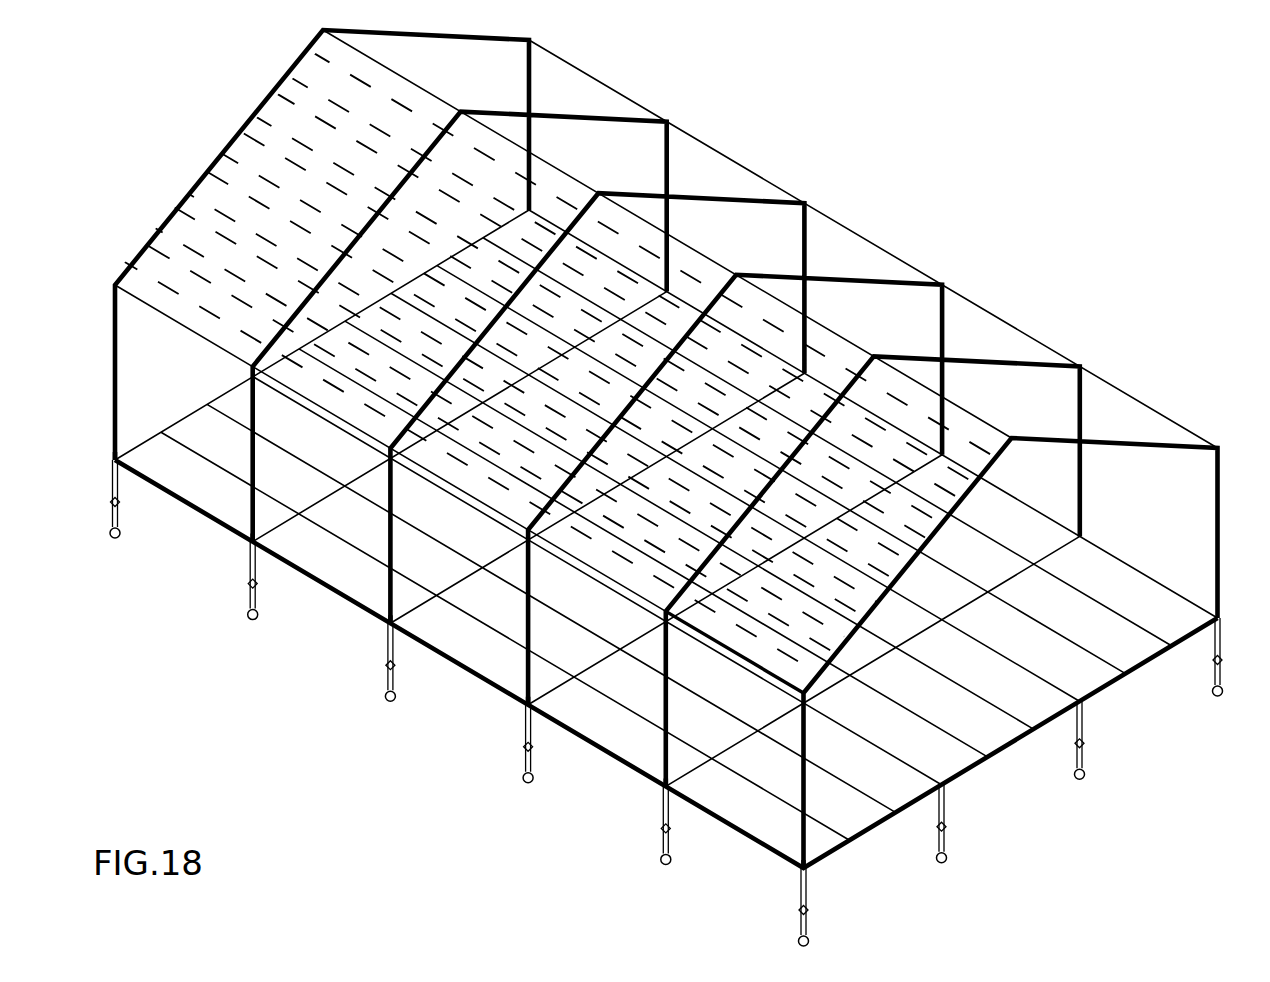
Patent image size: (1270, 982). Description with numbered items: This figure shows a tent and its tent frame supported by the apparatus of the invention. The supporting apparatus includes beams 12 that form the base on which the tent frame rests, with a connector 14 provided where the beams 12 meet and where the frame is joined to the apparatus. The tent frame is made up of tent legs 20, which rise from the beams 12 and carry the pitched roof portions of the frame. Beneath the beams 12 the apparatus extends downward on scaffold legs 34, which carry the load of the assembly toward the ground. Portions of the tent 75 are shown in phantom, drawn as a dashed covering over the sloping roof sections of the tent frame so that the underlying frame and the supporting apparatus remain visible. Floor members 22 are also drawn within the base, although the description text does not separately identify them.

The base frame 12 is at (741, 834).
The post base connector 14 is at (527, 705).
The support frame 20 is at (1226, 492).
The floor grid members 22 is at (1055, 652).
The ground stake 34 is at (660, 798).
The roof cover panel 75 is at (305, 63).